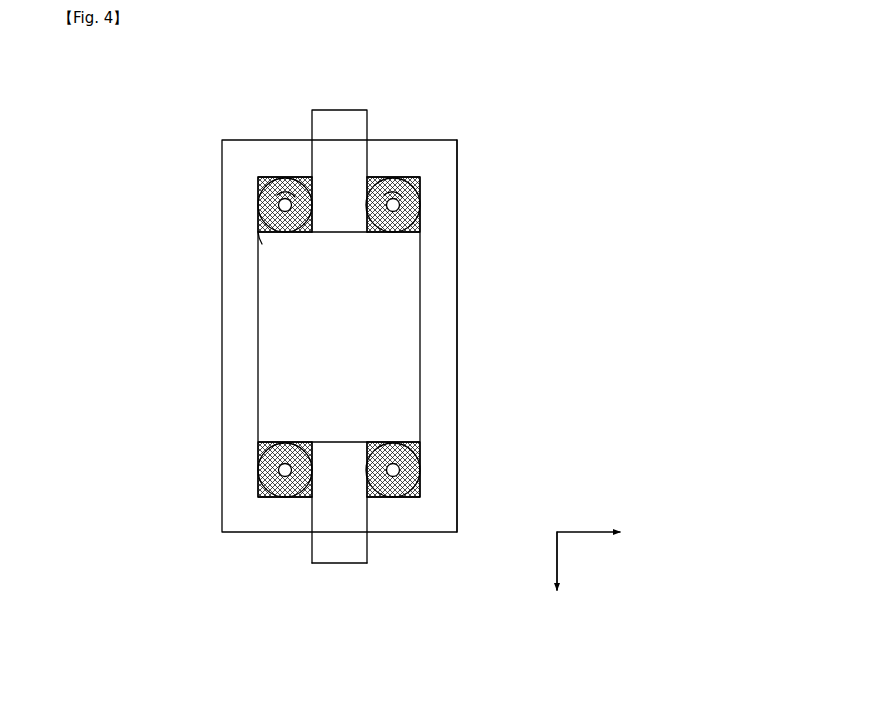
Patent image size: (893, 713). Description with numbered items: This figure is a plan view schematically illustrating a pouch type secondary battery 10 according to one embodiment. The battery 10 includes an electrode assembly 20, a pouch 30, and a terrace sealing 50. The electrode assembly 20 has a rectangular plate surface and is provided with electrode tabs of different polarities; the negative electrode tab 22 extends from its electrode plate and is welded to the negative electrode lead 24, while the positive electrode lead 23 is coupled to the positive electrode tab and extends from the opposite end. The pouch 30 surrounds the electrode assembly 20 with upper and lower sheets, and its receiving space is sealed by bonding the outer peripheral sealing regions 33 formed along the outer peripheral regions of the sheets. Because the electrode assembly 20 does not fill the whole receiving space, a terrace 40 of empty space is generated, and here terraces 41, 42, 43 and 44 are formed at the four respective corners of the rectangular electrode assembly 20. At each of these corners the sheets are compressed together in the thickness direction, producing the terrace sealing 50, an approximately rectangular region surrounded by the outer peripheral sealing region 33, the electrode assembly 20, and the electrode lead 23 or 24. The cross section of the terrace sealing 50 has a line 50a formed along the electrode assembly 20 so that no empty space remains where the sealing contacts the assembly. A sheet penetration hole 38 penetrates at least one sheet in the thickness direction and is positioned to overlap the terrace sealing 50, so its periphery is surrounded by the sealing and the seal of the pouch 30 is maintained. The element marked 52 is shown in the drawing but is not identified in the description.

The pouch type secondary battery 10 is at (198, 107).
The electrode assembly 20 is at (257, 345).
The negative electrode tab 22 is at (355, 458).
The positive electrode lead 23 is at (342, 137).
The negative electrode lead 24 is at (333, 550).
The pouch 30 is at (235, 411).
The outer peripheral sealing region 33 is at (440, 331).
The sheet penetration hole 38 is at (283, 210).
The terrace 40 is at (260, 492).
The terrace 41 is at (307, 177).
The terrace 42 is at (422, 177).
The terrace 43 is at (424, 483).
The terrace 44 is at (283, 497).
The terrace sealing 50 is at (260, 198).
The line 50a is at (250, 248).
The bearing inner ring 52 is at (288, 193).